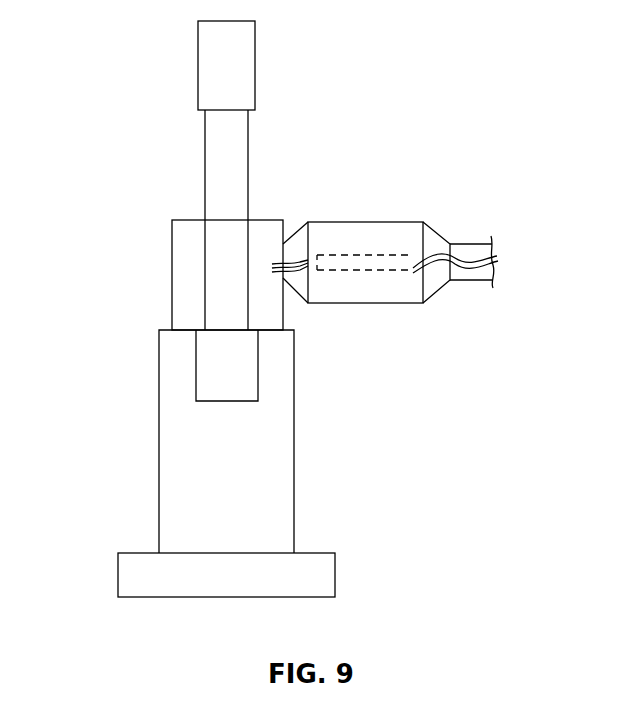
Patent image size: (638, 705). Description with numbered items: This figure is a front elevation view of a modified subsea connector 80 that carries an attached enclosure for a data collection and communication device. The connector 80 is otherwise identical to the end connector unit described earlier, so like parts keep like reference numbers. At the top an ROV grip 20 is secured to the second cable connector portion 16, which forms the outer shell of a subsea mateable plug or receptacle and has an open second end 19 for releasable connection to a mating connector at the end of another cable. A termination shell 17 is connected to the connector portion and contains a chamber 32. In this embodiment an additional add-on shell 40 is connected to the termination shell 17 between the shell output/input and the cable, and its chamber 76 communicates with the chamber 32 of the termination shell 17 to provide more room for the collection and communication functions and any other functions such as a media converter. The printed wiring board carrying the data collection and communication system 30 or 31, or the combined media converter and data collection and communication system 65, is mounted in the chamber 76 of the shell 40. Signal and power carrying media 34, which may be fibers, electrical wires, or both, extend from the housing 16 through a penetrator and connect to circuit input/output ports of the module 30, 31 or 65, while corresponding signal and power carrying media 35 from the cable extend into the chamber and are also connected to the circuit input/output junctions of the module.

The modified subsea connector 80 is at (119, 169).
The ROV grip 20 is at (243, 58).
The termination shell 17 is at (186, 283).
The second cable connector portion 16 is at (172, 495).
The open second end 19 is at (320, 600).
The chamber 32 is at (278, 308).
The add-on shell 40 is at (413, 222).
The chamber 76 is at (370, 292).
The signal and power carrying media 35 is at (460, 247).
The signal and power carrying media 34 is at (292, 261).
The data collection and communication system 30 is at (340, 252).
The data collection and communication system 31 is at (357, 222).
The combined media converter and data collection and communication system 65 is at (347, 239).